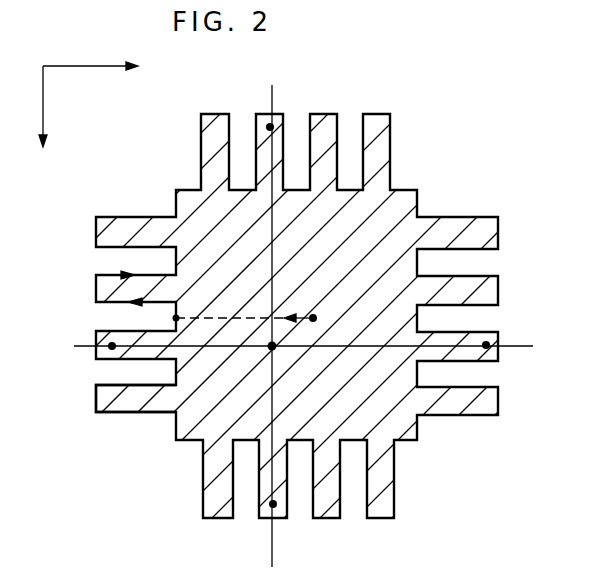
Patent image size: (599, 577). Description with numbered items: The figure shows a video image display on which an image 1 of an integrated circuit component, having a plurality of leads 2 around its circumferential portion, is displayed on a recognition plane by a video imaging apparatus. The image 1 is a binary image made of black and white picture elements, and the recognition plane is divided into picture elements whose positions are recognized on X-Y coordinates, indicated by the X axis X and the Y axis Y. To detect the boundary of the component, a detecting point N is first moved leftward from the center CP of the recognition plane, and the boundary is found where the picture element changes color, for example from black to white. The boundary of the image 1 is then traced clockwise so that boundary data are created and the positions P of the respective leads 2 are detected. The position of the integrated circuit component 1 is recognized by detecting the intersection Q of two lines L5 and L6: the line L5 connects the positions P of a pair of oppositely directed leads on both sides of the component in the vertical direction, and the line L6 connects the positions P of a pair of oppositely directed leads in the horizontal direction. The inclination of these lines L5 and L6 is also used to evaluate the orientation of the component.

The image of the integrated circuit component 1 is at (202, 412).
The lead 2 is at (96, 388).
The position of lead P is at (269, 125).
The detecting point N is at (174, 318).
The intersection Q is at (275, 349).
The center of the recognition plane CP is at (314, 317).
The line L5 is at (273, 100).
The line L6 is at (508, 345).
The X coordinate axis X is at (102, 69).
The Y coordinate axis Y is at (42, 121).